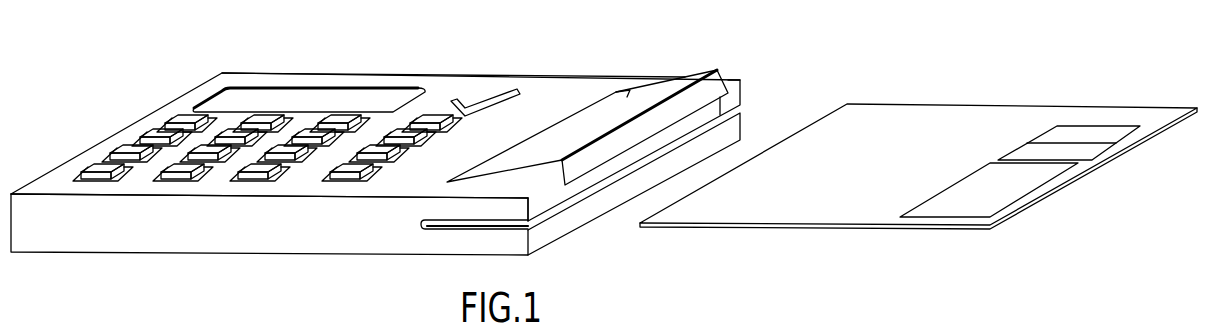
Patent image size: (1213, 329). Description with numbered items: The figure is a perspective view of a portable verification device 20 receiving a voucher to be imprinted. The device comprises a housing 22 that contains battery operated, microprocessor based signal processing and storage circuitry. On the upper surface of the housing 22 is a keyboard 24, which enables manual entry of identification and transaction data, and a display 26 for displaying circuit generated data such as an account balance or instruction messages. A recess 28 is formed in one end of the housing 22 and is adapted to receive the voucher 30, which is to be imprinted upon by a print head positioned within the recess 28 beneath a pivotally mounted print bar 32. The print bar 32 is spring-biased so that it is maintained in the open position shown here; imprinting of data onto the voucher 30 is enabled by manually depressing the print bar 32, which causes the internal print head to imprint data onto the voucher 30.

The portable verification device 20 is at (396, 64).
The housing 22 is at (110, 237).
The keyboard 24 is at (139, 128).
The display 26 is at (243, 100).
The recess 28 is at (447, 228).
The voucher 30 is at (1041, 218).
The print bar 32 is at (681, 87).